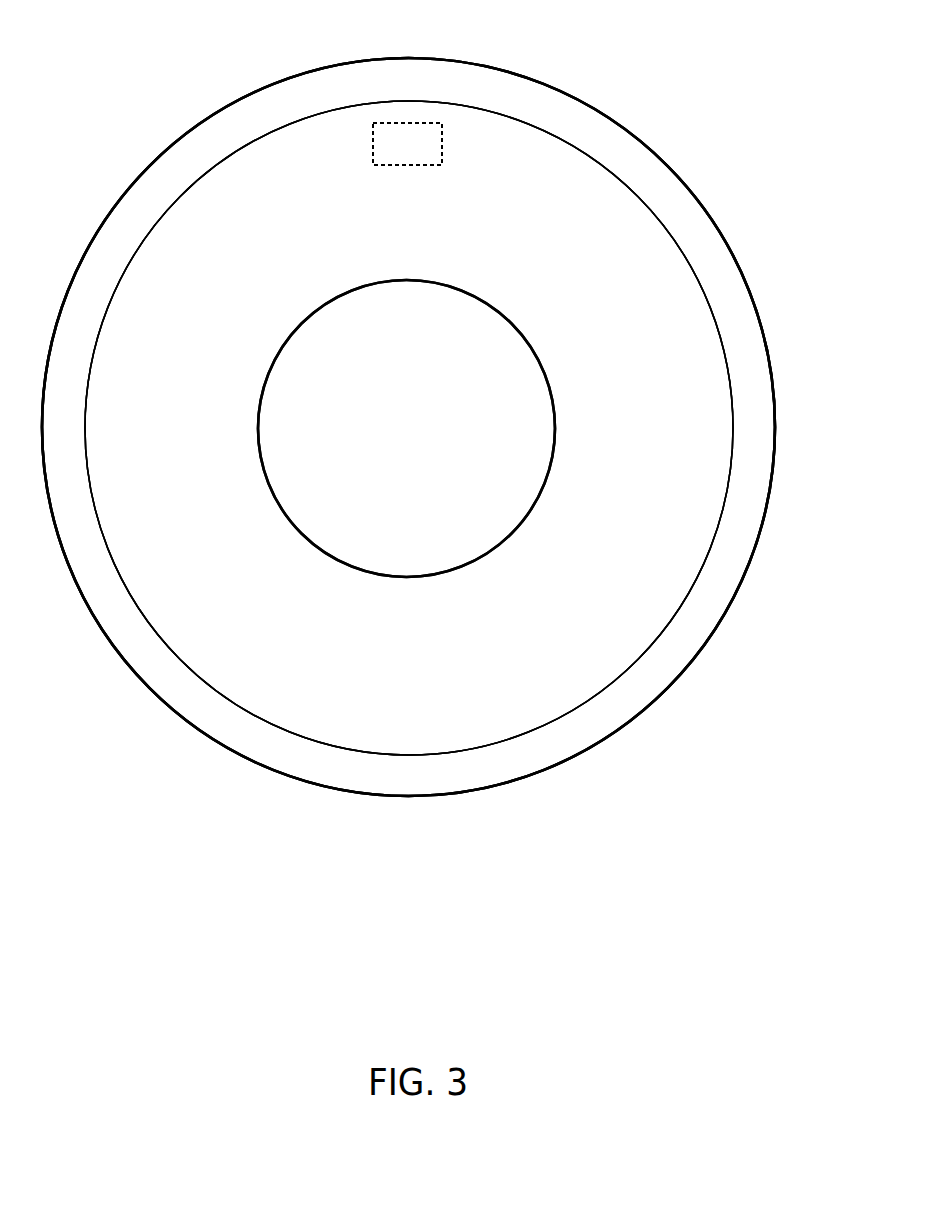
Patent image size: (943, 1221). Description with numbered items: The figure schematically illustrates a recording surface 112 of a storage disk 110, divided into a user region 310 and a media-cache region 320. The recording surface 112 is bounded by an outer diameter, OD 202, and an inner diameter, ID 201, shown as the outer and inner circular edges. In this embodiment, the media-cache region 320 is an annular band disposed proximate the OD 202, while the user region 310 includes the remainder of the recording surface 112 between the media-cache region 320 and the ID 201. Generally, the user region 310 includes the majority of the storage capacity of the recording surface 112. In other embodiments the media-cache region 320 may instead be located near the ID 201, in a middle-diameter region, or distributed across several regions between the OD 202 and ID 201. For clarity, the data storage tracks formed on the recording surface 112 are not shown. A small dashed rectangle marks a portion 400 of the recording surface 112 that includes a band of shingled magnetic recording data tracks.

The substrate support assembly 110 is at (590, 62).
The recording surface 112 is at (429, 235).
The ID 201 is at (279, 357).
The OD 202 is at (185, 728).
The user region 310 is at (189, 440).
The media-cache region 320 is at (188, 151).
The portion of recording surface 400 is at (412, 123).